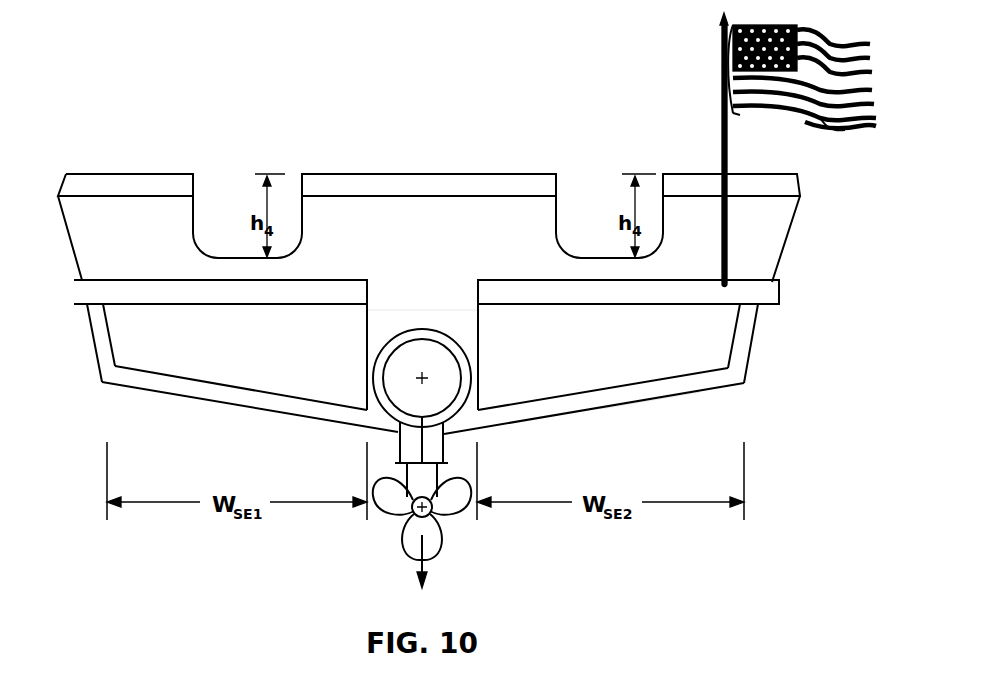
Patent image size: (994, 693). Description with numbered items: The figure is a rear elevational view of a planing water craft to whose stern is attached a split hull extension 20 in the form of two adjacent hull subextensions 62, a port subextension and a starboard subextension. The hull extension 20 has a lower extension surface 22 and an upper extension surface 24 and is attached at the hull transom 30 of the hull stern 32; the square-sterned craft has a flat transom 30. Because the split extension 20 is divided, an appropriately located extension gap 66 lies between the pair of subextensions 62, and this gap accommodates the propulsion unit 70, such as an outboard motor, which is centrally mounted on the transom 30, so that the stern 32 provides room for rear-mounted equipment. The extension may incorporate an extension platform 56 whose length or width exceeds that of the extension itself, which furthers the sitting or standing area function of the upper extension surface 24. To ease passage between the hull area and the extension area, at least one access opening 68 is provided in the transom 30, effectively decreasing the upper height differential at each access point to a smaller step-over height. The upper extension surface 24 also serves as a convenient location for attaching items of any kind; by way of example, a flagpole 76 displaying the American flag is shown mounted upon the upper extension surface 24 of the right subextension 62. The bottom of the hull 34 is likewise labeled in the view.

The hull extension 20 is at (123, 338).
The lower extension surface 22 is at (245, 388).
The upper extension surface 24 is at (168, 293).
The hull transom 30 is at (767, 259).
The hull stern 32 is at (767, 232).
The hull bottom surface 34 is at (633, 412).
The extension platform 56 is at (275, 278).
The subextension 62 is at (205, 357).
The extension gap 66 is at (432, 308).
The access opening 68 is at (210, 163).
The propulsion unit 70 is at (452, 413).
The flagpole 76 is at (708, 80).